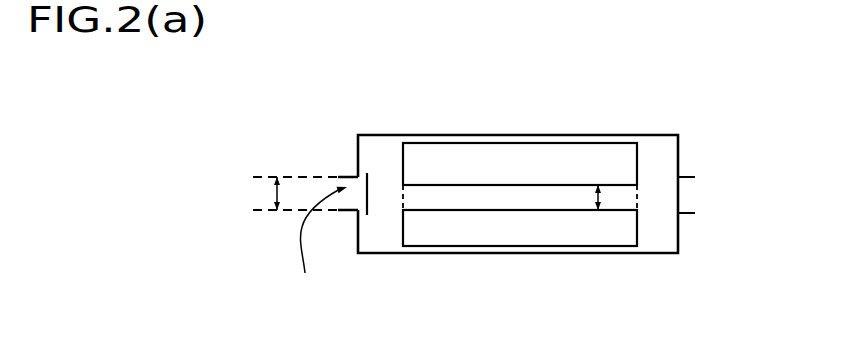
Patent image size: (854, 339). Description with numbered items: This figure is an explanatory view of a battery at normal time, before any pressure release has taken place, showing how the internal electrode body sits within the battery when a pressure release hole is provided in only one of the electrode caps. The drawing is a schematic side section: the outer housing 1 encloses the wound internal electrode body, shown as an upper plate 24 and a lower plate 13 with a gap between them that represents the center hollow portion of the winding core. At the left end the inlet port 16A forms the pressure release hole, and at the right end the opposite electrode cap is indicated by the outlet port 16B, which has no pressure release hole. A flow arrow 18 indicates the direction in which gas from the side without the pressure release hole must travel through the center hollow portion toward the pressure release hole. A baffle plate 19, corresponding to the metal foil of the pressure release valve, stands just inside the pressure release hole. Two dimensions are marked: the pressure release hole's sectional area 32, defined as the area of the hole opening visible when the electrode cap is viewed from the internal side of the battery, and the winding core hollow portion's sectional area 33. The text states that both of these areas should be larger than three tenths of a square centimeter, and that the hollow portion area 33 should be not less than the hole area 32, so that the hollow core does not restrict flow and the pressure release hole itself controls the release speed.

The housing 1 is at (533, 233).
The lower plate 13 is at (447, 212).
The inlet port 16A is at (350, 175).
The outlet port 16B is at (690, 215).
The fluid flow 18 is at (318, 248).
The metal foil 19 is at (367, 198).
The upper plate 24 is at (555, 134).
The pressure release hole's sectional area 32 is at (273, 193).
The winding core hollow portion's sectional area 33 is at (603, 198).